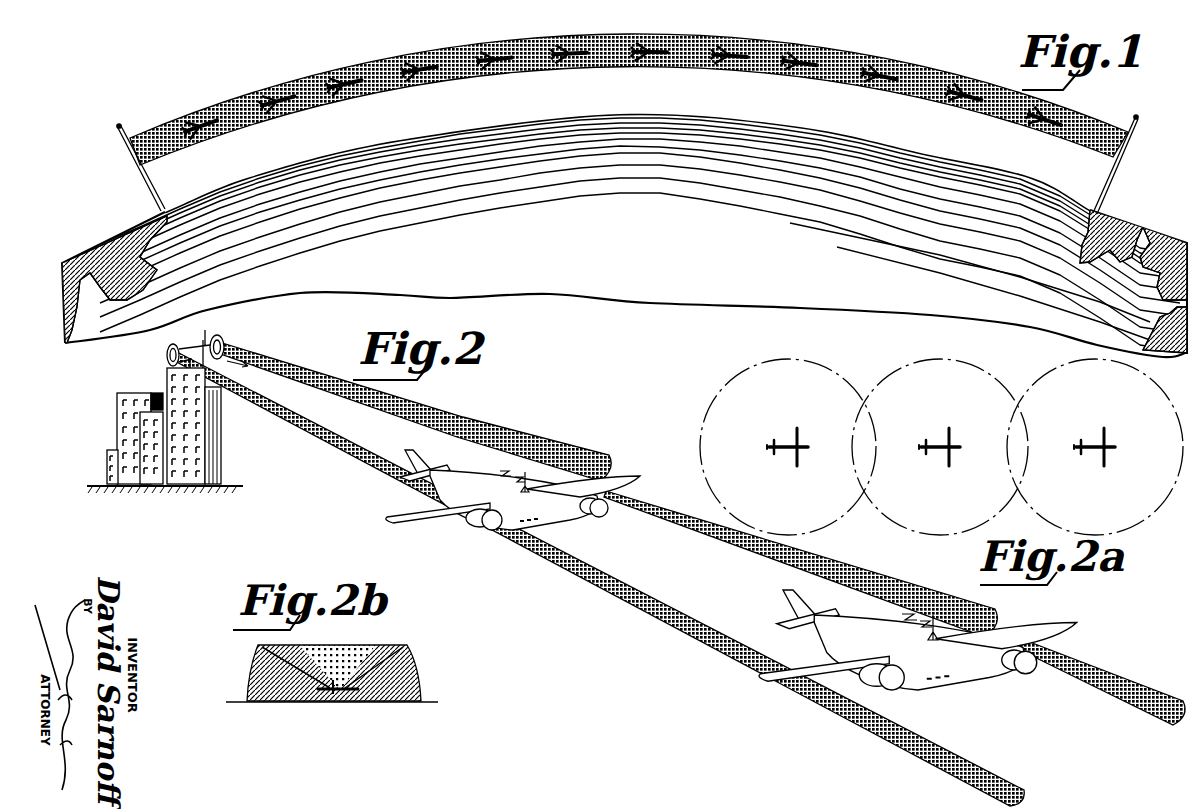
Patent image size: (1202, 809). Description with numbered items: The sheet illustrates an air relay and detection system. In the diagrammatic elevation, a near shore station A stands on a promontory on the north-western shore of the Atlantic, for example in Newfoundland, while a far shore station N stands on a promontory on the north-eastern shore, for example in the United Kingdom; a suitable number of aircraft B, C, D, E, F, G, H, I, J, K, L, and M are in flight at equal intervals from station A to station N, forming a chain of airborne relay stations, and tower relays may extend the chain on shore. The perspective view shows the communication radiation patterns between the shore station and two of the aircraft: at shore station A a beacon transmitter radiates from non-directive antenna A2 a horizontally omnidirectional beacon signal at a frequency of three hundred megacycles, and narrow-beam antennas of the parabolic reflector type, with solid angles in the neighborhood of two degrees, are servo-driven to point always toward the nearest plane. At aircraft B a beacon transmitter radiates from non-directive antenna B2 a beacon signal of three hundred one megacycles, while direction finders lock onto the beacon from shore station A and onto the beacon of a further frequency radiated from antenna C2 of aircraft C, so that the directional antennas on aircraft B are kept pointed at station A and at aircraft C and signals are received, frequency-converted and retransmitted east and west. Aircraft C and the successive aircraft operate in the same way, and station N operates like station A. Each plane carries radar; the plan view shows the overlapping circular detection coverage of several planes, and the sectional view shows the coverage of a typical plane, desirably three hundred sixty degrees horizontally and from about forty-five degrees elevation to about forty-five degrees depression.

In FIG. 1, the near shore station A is at (147, 177).
In FIG. 2, the near shore station A is at (163, 372).
In FIG. 2, the non-directive antenna A2 is at (197, 345).
In FIG. 1, the aircraft B is at (200, 111).
In FIG. 2, the aircraft B is at (552, 524).
In FIG. 2, the non-directive antenna B2 is at (498, 473).
In FIG. 1, the aircraft C is at (272, 92).
In FIG. 2, the aircraft C is at (930, 686).
In FIG. 2, the antenna C2 is at (903, 623).
In FIG. 1, the aircraft D is at (345, 73).
In FIG. 1, the aircraft E is at (420, 60).
In FIG. 1, the aircraft F is at (496, 49).
In FIG. 1, the aircraft G is at (571, 45).
In FIG. 1, the aircraft H is at (651, 45).
In FIG. 1, the aircraft I is at (732, 49).
In FIG. 1, the aircraft J is at (803, 56).
In FIG. 1, the aircraft K is at (886, 69).
In FIG. 1, the aircraft L is at (969, 88).
In FIG. 1, the aircraft M is at (1055, 113).
In FIG. 1, the far shore station N is at (1118, 166).